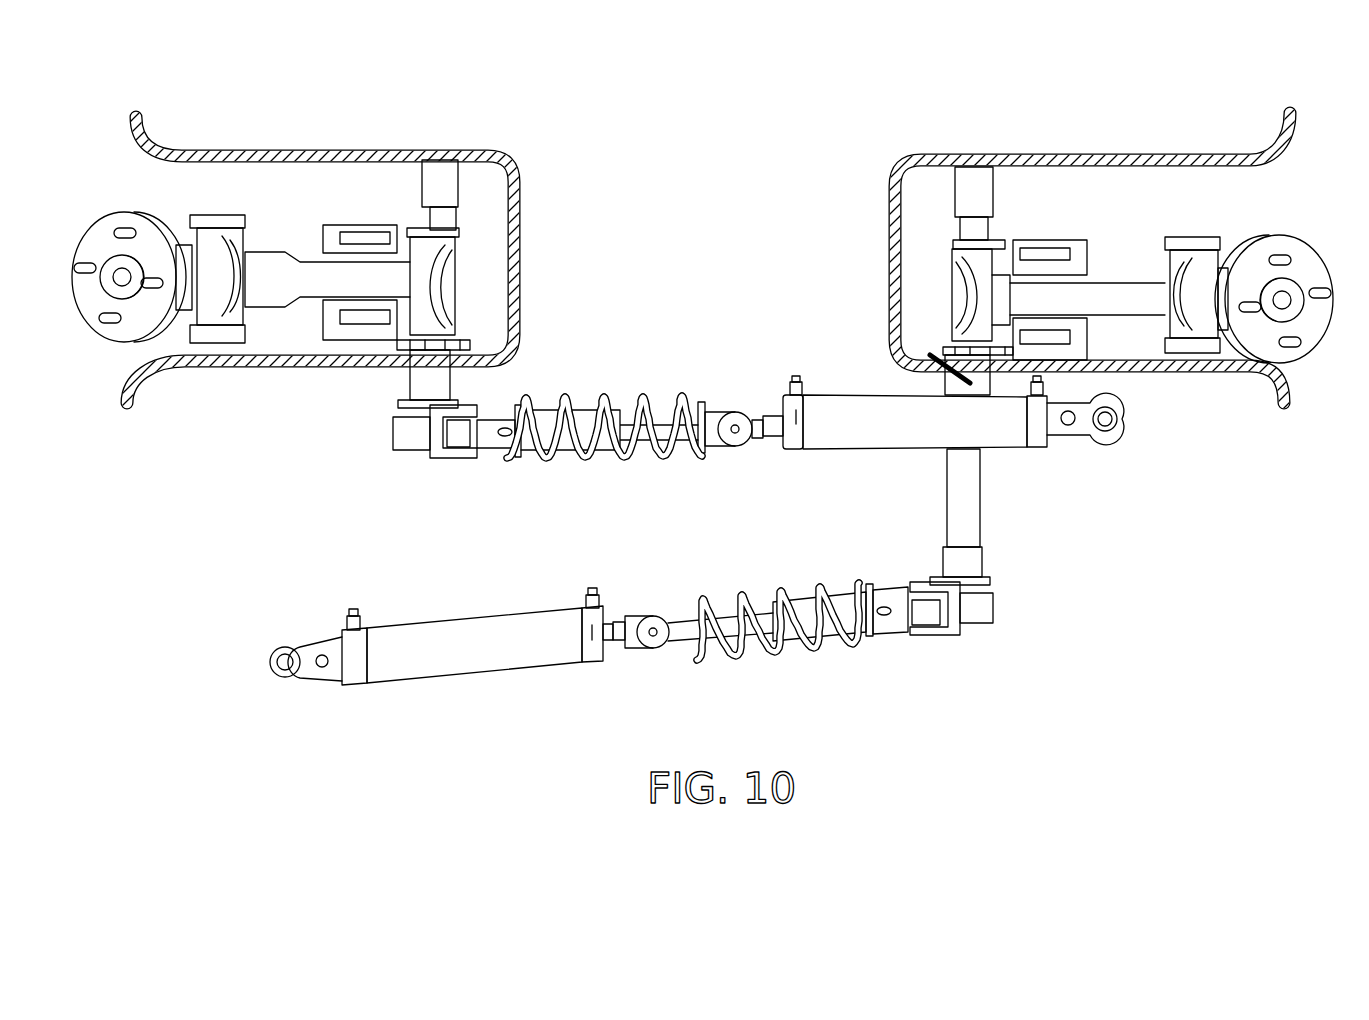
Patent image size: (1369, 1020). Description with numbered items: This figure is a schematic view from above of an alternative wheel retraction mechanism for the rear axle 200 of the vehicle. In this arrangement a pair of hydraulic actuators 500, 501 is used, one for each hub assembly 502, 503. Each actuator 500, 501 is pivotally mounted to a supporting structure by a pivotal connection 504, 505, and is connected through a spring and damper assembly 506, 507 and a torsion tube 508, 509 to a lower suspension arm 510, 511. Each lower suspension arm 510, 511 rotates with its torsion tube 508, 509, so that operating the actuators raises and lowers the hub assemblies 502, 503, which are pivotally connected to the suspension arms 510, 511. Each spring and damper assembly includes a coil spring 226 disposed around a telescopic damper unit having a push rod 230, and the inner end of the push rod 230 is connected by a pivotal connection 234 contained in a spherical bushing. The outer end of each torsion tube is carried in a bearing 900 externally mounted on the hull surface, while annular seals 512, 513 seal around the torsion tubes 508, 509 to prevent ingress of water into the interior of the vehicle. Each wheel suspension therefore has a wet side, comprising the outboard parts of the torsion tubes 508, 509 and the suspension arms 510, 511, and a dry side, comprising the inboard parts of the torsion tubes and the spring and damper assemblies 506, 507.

The rear axle 200 is at (686, 177).
The coil spring 226 is at (763, 655).
The push rod 230 is at (669, 417).
The pivotal connection 234 is at (734, 424).
The hydraulic actuator 500 is at (926, 438).
The hydraulic actuator 501 is at (493, 628).
The hub assembly 502 is at (128, 214).
The hub assembly 503 is at (1318, 330).
The pivotal connection 504 is at (280, 683).
The pivotal connection 505 is at (1118, 437).
The spring and damper assembly 506 is at (547, 398).
The spring and damper assembly 507 is at (858, 650).
The torsion tube 508 is at (418, 384).
The torsion tube 509 is at (940, 355).
The lower suspension arm 510 is at (287, 257).
The lower suspension arm 511 is at (1118, 275).
The annular seal 512 is at (403, 360).
The annular seal 513 is at (934, 385).
The bearing 900 is at (432, 164).